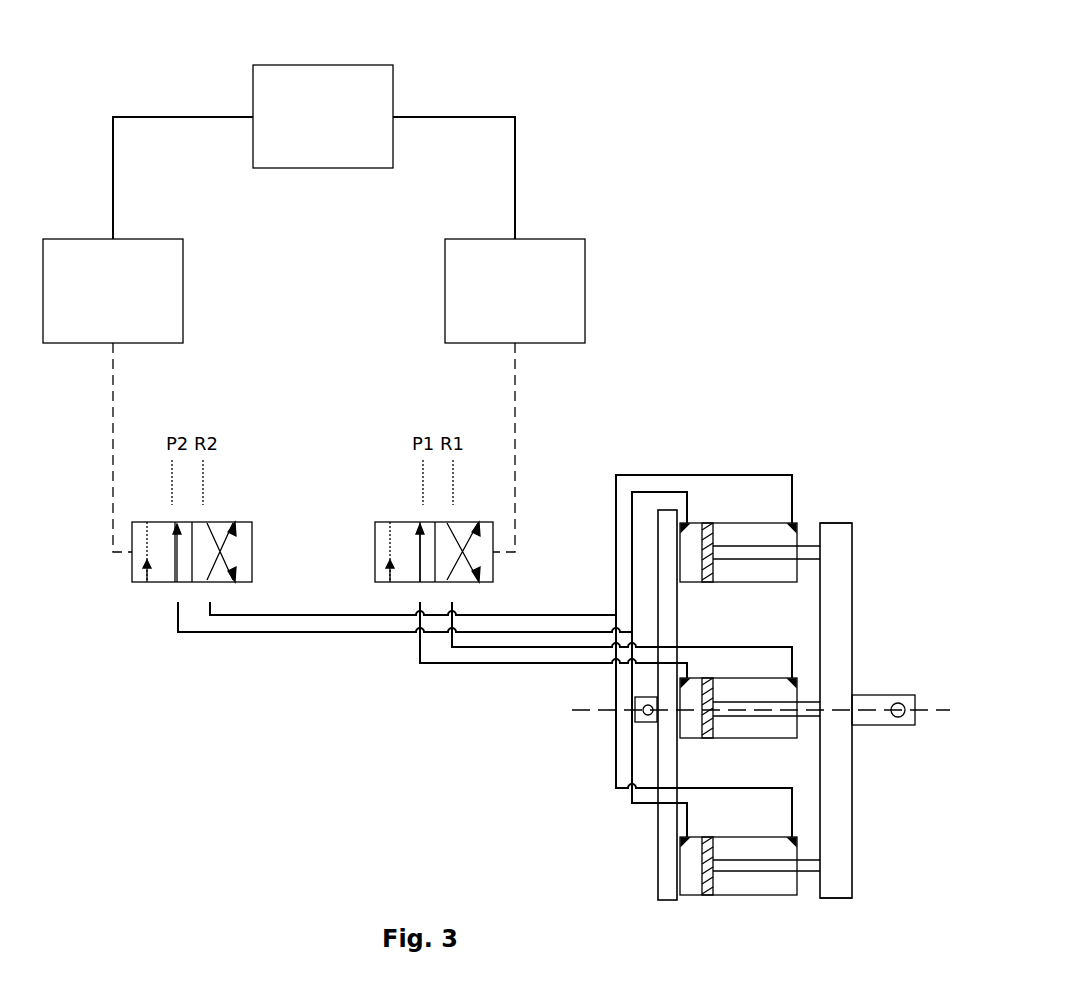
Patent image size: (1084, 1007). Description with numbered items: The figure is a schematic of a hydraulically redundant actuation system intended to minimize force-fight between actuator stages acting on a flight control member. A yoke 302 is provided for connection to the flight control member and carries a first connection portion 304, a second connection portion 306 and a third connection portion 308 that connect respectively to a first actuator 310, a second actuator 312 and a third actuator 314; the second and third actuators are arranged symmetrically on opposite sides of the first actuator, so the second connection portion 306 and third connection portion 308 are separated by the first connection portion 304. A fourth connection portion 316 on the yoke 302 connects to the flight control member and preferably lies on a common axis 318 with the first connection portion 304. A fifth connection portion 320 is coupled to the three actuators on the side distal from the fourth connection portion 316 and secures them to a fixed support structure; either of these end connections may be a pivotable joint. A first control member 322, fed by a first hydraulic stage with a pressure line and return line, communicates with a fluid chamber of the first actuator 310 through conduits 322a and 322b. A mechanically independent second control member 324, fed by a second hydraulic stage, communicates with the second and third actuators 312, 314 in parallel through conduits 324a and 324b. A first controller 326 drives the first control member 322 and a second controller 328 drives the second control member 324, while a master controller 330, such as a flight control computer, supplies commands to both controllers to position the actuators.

The yoke 302 is at (855, 587).
The first connection portion 304 is at (830, 707).
The second connection portion 306 is at (828, 553).
The third connection portion 308 is at (833, 865).
The first actuator 310 is at (707, 738).
The second actuator 312 is at (707, 582).
The third actuator 314 is at (707, 895).
The fourth connection portion 316 is at (922, 708).
The common axis 318 is at (580, 712).
The fifth connection portion 320 is at (647, 722).
The first control member 322 is at (375, 553).
The conduit 322a is at (445, 665).
The conduit 322b is at (515, 648).
The second control member 324 is at (165, 582).
The conduit 324a is at (230, 630).
The conduit 324b is at (358, 615).
The first controller 326 is at (445, 292).
The second controller 328 is at (183, 292).
The master controller 330 is at (322, 65).